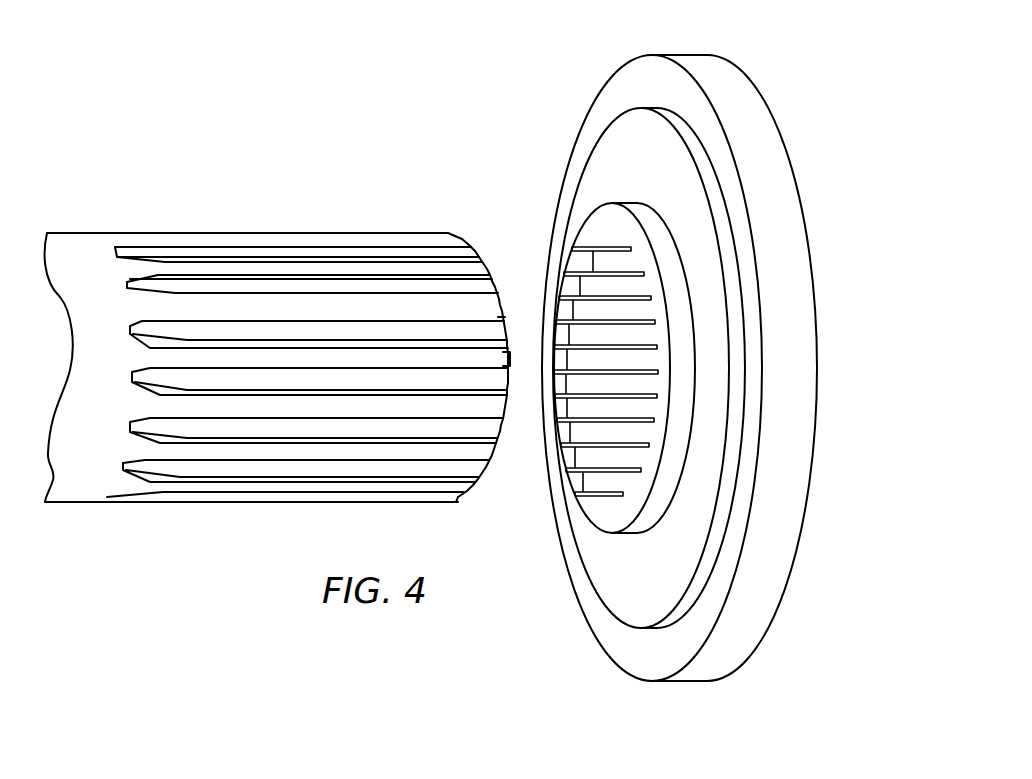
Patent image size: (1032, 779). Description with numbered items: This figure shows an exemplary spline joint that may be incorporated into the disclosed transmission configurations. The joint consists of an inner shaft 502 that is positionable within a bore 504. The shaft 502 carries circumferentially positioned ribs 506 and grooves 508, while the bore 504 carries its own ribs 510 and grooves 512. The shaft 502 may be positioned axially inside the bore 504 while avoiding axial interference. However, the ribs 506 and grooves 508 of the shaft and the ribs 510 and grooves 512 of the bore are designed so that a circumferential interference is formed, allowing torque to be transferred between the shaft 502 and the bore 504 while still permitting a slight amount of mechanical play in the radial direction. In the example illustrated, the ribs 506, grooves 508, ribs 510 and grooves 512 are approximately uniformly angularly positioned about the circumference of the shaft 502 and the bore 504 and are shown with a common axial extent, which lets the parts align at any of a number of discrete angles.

The inner shaft 502 is at (85, 252).
The bore 504 is at (667, 112).
The ribs 506 is at (482, 305).
The grooves 508 is at (343, 338).
The ribs 510 is at (608, 235).
The grooves 512 is at (653, 323).